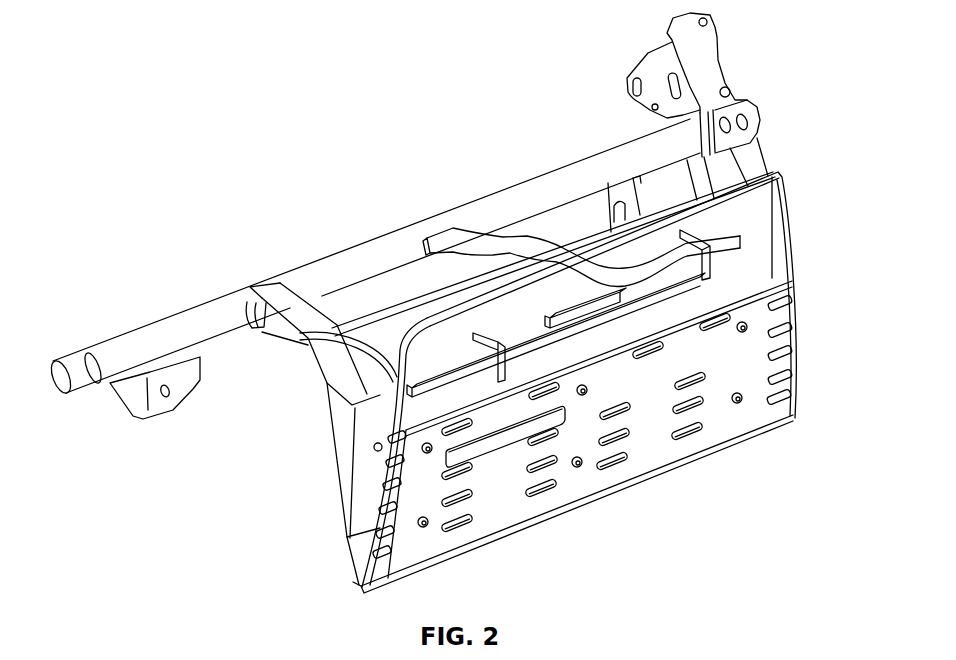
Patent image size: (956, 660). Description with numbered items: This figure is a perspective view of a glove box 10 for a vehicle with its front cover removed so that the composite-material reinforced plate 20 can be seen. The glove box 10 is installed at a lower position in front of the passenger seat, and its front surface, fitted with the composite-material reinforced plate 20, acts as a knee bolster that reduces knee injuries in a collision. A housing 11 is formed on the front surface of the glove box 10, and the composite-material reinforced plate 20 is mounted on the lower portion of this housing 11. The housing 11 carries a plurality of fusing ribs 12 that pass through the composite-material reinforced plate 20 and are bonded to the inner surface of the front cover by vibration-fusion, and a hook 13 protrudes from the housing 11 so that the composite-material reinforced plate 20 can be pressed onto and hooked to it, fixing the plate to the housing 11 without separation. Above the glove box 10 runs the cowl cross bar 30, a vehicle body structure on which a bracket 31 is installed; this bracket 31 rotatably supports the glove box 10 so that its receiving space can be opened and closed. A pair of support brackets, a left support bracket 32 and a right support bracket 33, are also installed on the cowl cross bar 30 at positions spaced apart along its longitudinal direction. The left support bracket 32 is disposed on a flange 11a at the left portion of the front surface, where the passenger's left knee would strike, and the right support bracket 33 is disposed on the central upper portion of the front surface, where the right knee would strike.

The glove box 10 is at (790, 158).
The housing 11 is at (753, 222).
The flange 11a is at (378, 456).
The fusing ribs 12 is at (648, 360).
The hook 13 is at (740, 403).
The composite-material reinforced plate 20 is at (742, 357).
The cowl cross bar 30 is at (377, 237).
The bracket 31 is at (712, 58).
The left support bracket 32 is at (347, 530).
The right support bracket 33 is at (478, 238).